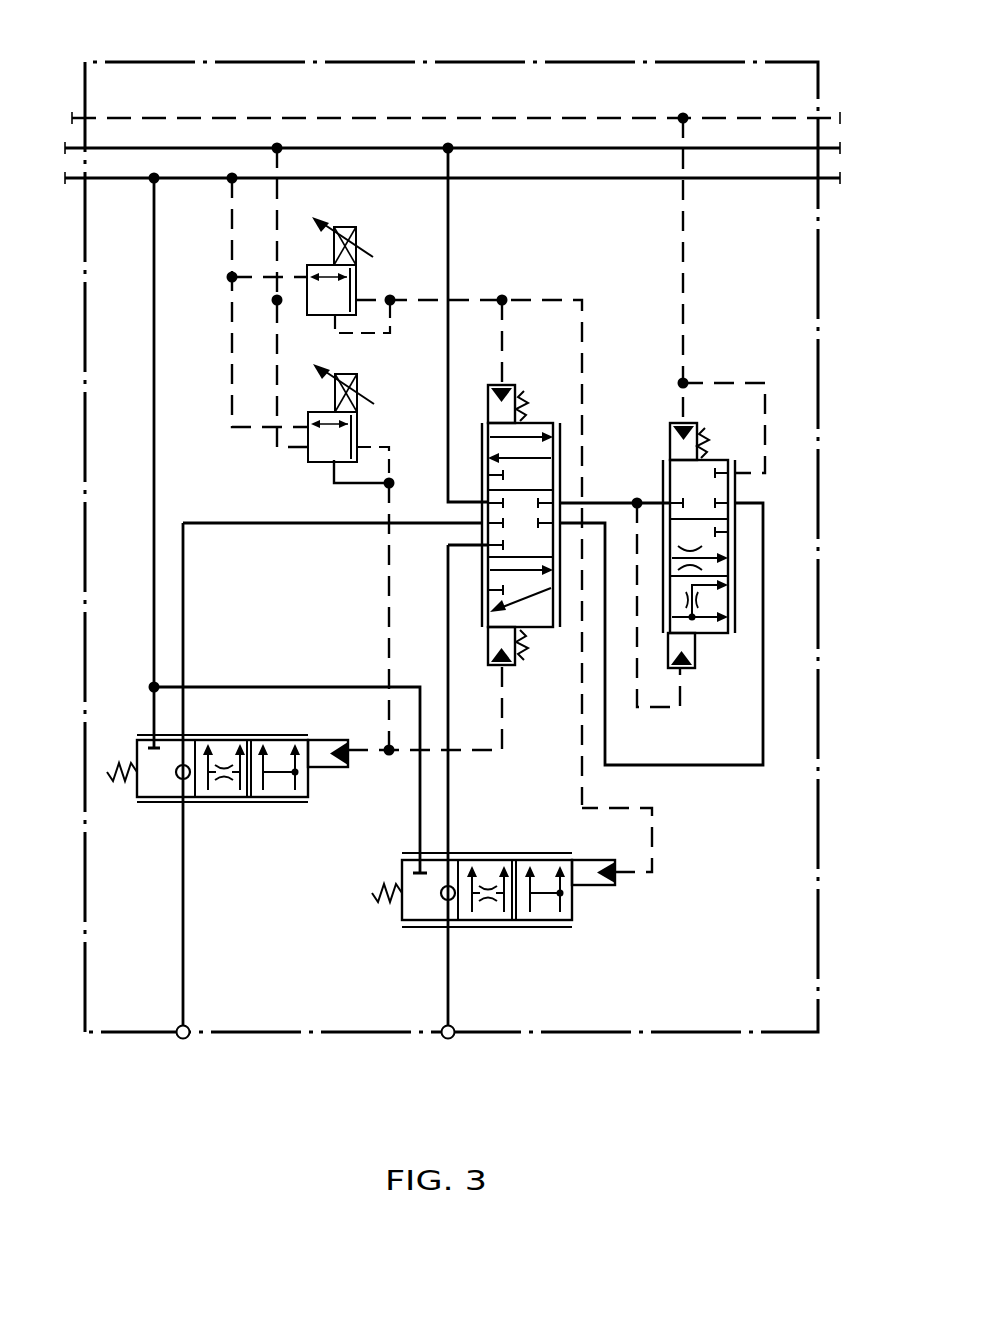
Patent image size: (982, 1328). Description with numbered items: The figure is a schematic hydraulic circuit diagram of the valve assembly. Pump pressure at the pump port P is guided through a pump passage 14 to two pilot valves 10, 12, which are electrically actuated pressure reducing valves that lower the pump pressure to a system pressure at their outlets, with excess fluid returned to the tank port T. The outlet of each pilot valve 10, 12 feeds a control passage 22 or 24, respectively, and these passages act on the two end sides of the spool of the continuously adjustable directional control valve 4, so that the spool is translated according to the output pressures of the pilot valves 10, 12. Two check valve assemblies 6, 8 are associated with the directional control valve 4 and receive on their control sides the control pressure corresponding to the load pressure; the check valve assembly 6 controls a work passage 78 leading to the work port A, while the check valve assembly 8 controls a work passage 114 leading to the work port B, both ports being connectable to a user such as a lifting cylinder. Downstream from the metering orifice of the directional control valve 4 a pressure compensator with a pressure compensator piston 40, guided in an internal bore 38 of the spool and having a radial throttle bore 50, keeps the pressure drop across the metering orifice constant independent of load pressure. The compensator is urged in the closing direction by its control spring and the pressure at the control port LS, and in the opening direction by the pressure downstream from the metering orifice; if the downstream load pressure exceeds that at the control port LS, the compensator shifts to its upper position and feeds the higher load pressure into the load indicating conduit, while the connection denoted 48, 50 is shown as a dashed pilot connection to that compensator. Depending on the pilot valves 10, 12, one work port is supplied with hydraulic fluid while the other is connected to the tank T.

The directional control valve 4 is at (551, 388).
The check valve assembly 6 is at (233, 805).
The check valve assembly 8 is at (515, 925).
The pilot valve 10 is at (322, 447).
The pilot valve 12 is at (337, 298).
The pump passage 14 is at (281, 223).
The control passage 22 is at (685, 225).
The control passage 24 is at (580, 784).
The internal bore 38 is at (622, 500).
The pressure compensator piston 40 is at (685, 480).
The load-sensing line 48 is at (793, 428).
The radial throttle bore 50 is at (765, 414).
The work passage 78 is at (183, 887).
The work passage 114 is at (450, 985).
The pump port P is at (416, 148).
The tank port T is at (107, 180).
The control port LS is at (653, 118).
The work port A is at (192, 1051).
The work port B is at (454, 1051).